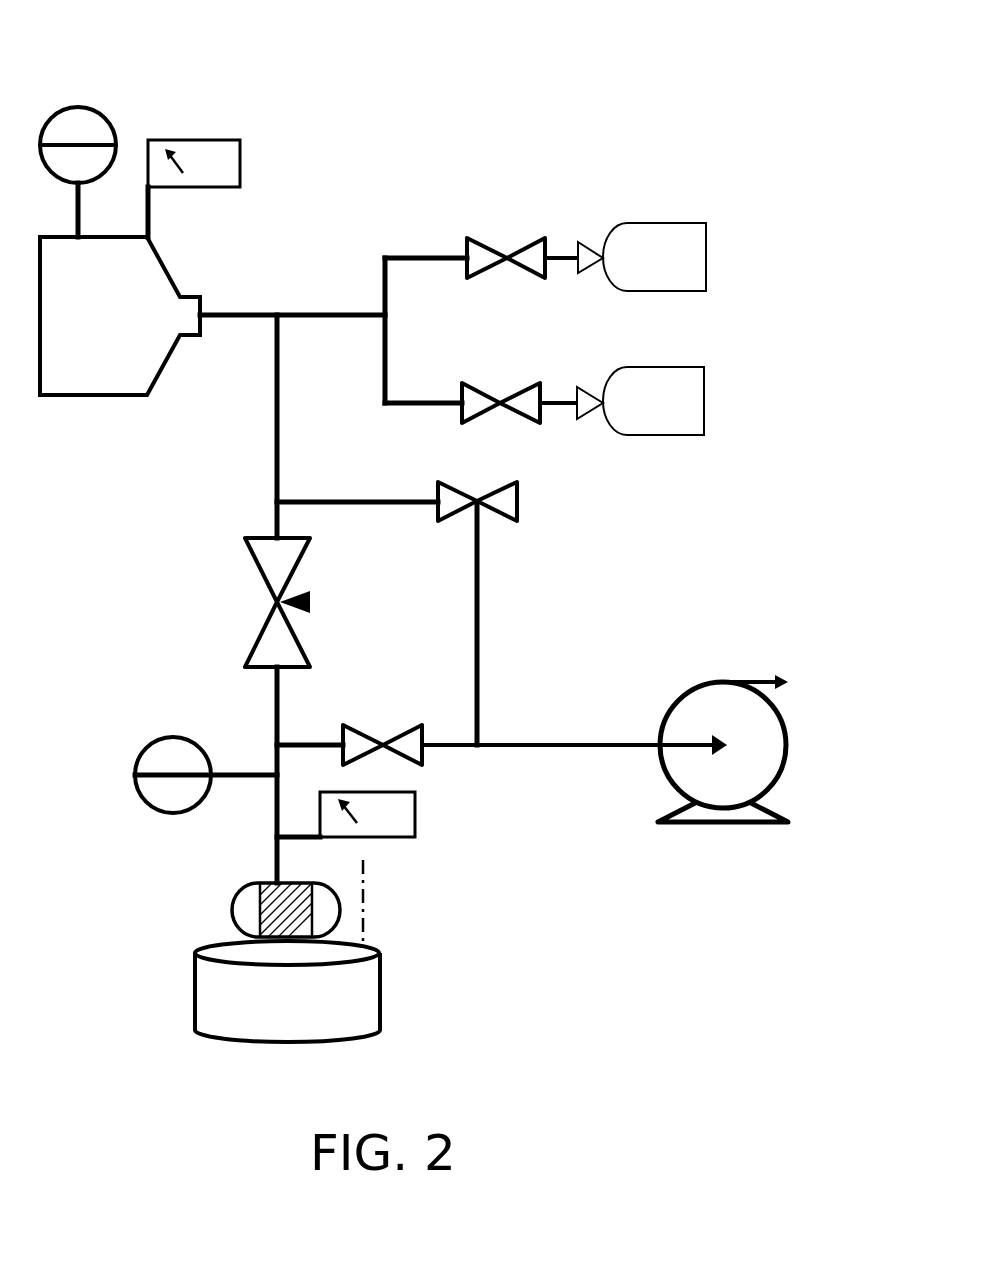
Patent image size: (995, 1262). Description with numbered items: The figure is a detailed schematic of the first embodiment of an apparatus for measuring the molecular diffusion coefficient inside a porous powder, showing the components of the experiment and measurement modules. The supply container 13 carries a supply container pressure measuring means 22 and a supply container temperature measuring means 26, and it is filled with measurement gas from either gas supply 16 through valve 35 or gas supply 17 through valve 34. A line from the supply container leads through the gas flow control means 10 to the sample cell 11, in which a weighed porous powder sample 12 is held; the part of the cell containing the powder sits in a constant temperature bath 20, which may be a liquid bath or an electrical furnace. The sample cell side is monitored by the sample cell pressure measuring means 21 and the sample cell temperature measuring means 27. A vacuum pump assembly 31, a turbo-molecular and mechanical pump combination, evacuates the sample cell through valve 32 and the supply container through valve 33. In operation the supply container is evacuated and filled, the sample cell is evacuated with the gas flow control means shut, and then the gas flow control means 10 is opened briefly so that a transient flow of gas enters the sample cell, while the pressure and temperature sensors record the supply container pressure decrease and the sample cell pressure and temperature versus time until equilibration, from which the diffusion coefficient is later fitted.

The gas flow control means 10 is at (275, 602).
The sample cell 11 is at (233, 915).
The porous powder sample 12 is at (287, 910).
The supply container 13 is at (124, 349).
The gas supply 16 is at (690, 282).
The gas supply 17 is at (695, 427).
The constant temperature bath 20 is at (380, 1005).
The pressure measuring means 21 is at (133, 772).
The supply container pressure measuring means 22 is at (85, 103).
The supply container temperature measuring means 26 is at (242, 137).
The sample cell temperature measuring means 27 is at (387, 838).
The vacuum pump assembly 31 is at (677, 823).
The valve 32 is at (388, 752).
The valve 33 is at (517, 515).
The valve 34 is at (542, 405).
The valve 35 is at (505, 260).